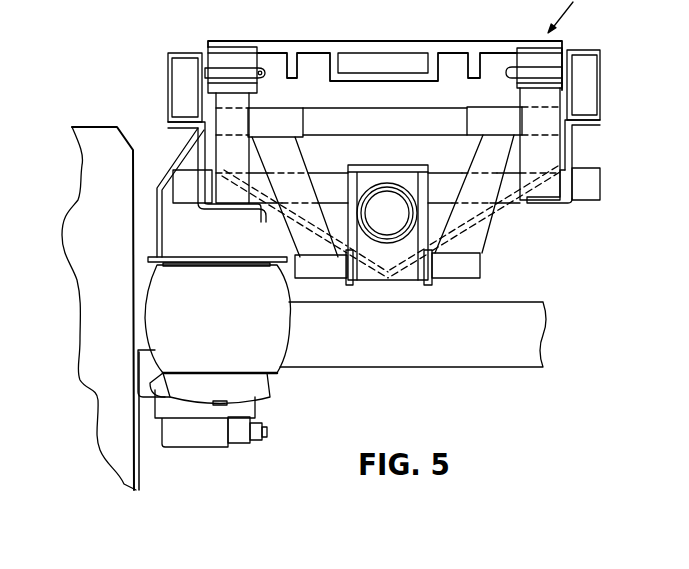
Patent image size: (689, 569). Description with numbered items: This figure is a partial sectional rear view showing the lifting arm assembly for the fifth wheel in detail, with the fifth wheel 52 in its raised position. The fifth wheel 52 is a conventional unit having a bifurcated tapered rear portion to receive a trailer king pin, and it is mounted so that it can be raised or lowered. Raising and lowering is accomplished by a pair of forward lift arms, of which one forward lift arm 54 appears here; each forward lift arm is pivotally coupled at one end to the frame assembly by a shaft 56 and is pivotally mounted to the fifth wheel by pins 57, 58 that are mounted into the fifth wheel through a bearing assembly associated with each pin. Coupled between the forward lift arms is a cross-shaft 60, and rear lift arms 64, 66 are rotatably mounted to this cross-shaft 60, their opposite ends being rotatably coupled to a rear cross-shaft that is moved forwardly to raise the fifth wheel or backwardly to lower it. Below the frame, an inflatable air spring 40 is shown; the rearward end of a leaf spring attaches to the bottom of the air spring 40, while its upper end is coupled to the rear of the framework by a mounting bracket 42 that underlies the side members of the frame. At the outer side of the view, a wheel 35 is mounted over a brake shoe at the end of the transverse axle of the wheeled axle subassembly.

The wheel 35 is at (82, 380).
The air spring 40 is at (288, 358).
The mounting bracket 42 is at (158, 217).
The fifth wheel 52 is at (463, 50).
The forward lift arm 54 is at (250, 205).
The shaft 56 is at (524, 204).
The pin 57 is at (266, 76).
The pin 58 is at (508, 73).
The cross-shaft 60 is at (381, 117).
The rear lift arm 64 is at (302, 163).
The rear lift arm 66 is at (473, 158).